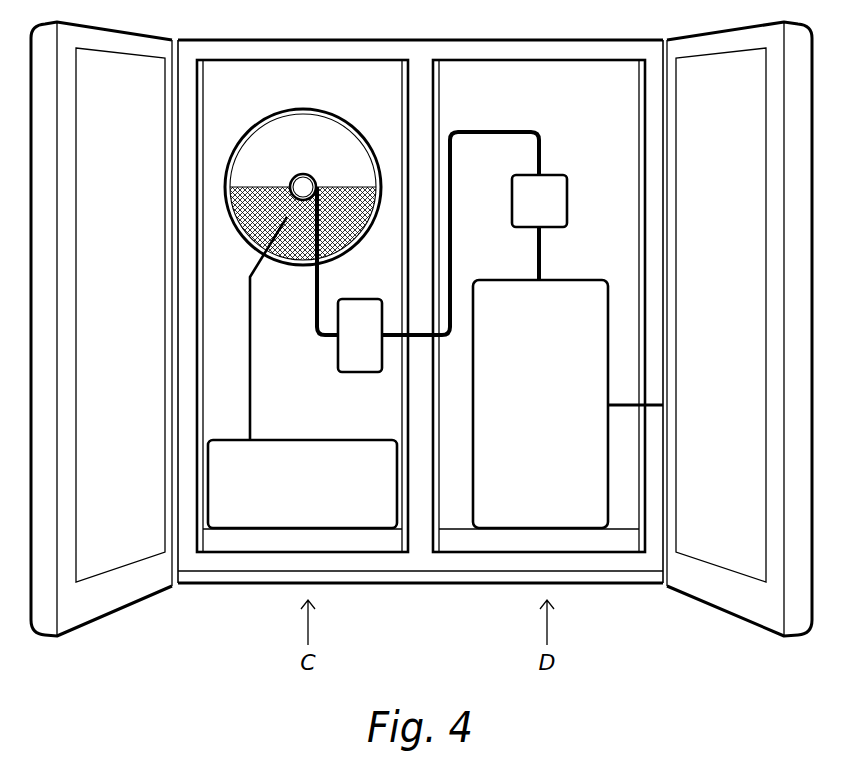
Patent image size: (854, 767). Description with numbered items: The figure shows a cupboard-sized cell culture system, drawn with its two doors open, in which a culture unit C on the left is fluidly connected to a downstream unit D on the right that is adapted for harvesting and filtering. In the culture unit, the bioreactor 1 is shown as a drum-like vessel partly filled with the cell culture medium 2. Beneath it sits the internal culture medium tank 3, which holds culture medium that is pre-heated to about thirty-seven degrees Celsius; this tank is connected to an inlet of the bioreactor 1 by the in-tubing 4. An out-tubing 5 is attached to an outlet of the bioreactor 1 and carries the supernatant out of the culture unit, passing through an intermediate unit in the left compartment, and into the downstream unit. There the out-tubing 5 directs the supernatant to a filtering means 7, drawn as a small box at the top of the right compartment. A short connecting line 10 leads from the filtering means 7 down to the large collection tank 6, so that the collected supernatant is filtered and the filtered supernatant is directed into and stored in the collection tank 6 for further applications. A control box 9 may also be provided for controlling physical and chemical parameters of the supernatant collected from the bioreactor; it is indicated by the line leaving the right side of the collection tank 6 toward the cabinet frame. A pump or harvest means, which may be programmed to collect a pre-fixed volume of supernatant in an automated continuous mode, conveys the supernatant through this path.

The bioreactor 1 is at (270, 141).
The cell culture medium 2 is at (343, 200).
The internal culture medium tank 3 is at (297, 495).
The in-tubing 4 is at (253, 405).
The out-tubing 5 is at (496, 130).
The collection tank 6 is at (534, 417).
The filtering means 7 is at (532, 212).
The control box 9 is at (628, 400).
The connecting line 10 is at (547, 253).